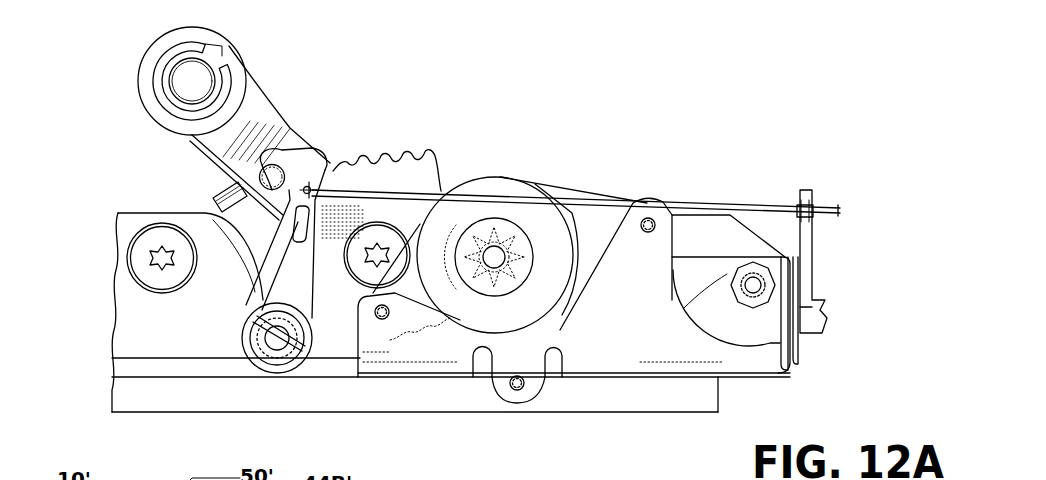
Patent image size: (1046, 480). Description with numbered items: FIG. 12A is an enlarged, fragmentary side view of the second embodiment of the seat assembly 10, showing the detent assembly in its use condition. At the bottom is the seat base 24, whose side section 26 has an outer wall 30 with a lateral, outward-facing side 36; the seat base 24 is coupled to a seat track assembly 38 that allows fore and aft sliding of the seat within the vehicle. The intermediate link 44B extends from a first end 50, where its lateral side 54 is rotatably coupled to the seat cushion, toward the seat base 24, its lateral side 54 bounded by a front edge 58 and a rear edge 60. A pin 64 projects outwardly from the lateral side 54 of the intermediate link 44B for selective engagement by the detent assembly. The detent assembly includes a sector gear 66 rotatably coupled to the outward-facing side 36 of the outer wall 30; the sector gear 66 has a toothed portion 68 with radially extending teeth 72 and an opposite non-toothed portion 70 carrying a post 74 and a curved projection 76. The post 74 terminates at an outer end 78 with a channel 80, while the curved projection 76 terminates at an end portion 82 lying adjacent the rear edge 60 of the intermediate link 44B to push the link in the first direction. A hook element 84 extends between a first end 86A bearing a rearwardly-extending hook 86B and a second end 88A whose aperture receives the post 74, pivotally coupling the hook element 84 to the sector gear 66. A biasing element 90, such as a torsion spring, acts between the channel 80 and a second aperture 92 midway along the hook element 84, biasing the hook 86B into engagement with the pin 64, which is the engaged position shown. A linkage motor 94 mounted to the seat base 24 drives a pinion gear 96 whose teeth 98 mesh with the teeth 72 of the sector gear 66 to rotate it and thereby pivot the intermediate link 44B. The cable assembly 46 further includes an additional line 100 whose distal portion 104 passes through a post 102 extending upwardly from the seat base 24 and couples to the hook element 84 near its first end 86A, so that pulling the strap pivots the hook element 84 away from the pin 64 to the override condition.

The seat assembly 10 is at (109, 61).
The first end 50 is at (212, 28).
The intermediate link 44B is at (267, 64).
The rear edge 60 is at (157, 129).
The lateral side 54 is at (256, 128).
The hook 86B is at (277, 147).
The front edge 58 is at (322, 162).
The pin 64 is at (283, 168).
The first end 86A is at (334, 166).
The sector gear 66 is at (428, 152).
The toothed portion 68 is at (446, 178).
The teeth 72 is at (479, 210).
The linkage motor 94 is at (621, 186).
The distal portion 104 is at (696, 205).
The additional line 100 is at (758, 190).
The cable assembly 46 is at (836, 181).
The post 102 is at (812, 256).
The curved projection 76 is at (225, 186).
The second aperture 92 is at (276, 243).
The end portion 82 is at (272, 228).
The biasing element 90 is at (263, 270).
The outer wall 30 is at (110, 344).
The outward-facing side 36 is at (179, 338).
The second end 88A is at (240, 342).
The channel 80 is at (268, 366).
The outer end 78 is at (275, 368).
The post 74 is at (290, 380).
The non-toothed portion 70 is at (333, 344).
The hook element 84 is at (318, 280).
The teeth 98 is at (507, 293).
The pinion gear 96 is at (524, 289).
The seat track assembly 38 is at (658, 414).
The seat base 24 is at (825, 347).
The side section 26 is at (803, 365).